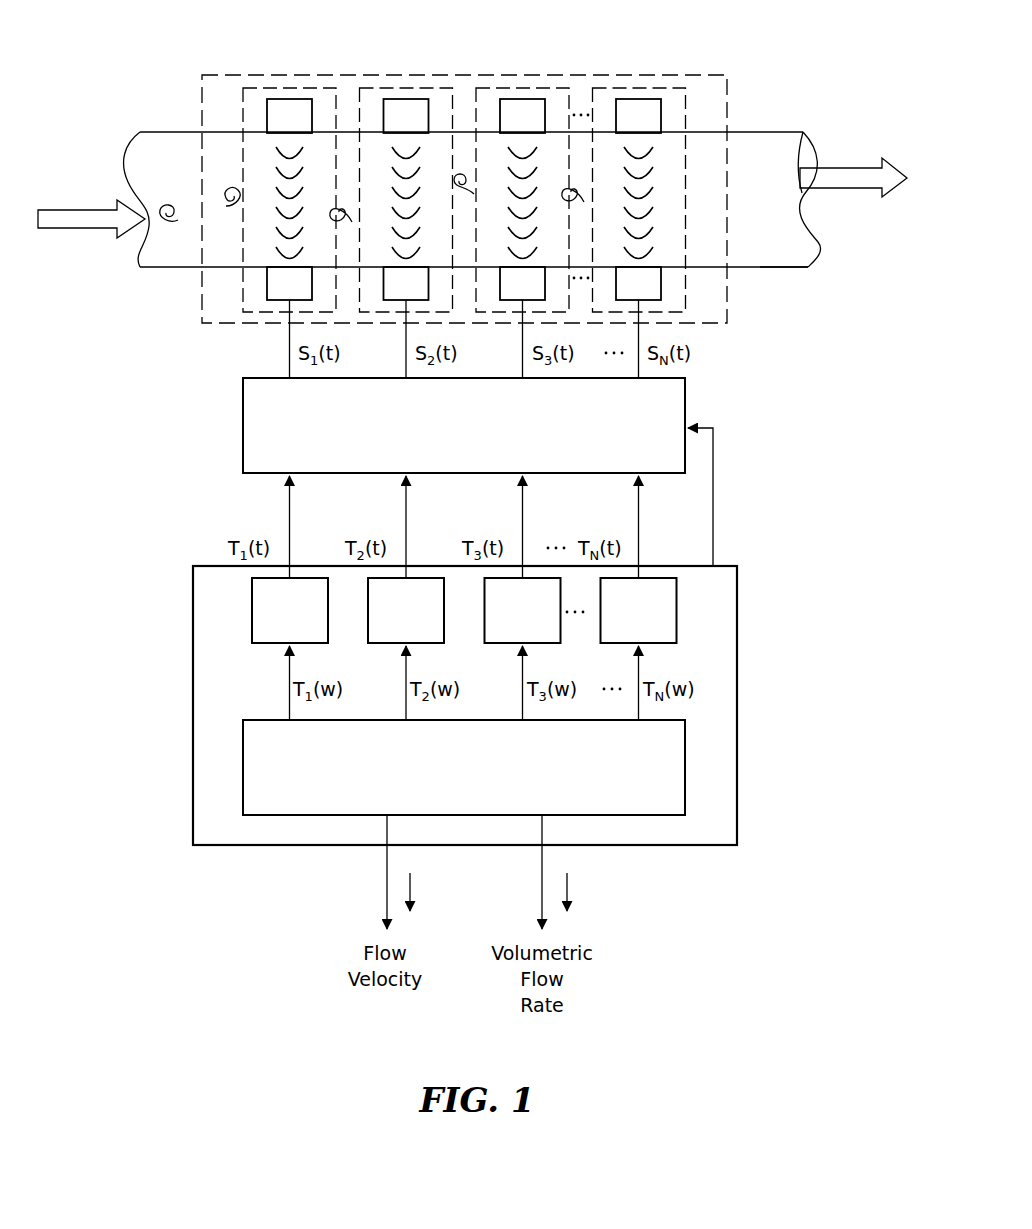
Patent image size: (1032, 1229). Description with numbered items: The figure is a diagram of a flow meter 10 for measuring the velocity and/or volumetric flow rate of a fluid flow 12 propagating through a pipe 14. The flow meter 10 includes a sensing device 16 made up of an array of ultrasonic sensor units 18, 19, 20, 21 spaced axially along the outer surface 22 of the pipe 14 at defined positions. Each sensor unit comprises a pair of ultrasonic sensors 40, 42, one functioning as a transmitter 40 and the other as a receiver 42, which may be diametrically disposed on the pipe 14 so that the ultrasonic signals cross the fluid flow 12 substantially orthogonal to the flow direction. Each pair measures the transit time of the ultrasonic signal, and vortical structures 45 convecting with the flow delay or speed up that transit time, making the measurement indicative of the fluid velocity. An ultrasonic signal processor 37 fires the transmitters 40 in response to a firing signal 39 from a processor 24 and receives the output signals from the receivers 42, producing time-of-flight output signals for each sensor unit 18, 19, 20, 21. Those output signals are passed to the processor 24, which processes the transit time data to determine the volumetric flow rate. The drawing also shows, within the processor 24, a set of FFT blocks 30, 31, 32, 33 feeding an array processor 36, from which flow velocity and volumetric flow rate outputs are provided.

The flow meter 10 is at (847, 373).
The fluid flow 12 is at (78, 205).
The pipe 14 is at (778, 124).
The sensing device 16 is at (728, 313).
The ultrasonic sensor unit 18 is at (296, 80).
The ultrasonic sensor unit 19 is at (412, 80).
The ultrasonic sensor unit 20 is at (529, 80).
The ultrasonic sensor unit 21 is at (645, 80).
The outer surface 22 is at (780, 258).
The processor 24 is at (740, 618).
The first FFT logic 30 is at (314, 566).
The second FFT logic 31 is at (432, 566).
The third FFT logic 32 is at (528, 566).
The Nth FFT logic 33 is at (660, 566).
The array processor 36 is at (686, 776).
The ultrasonic signal processor 37 is at (243, 422).
The firing signal 39 is at (717, 485).
The ultrasonic sensor (transmitter) 40 is at (278, 98).
The ultrasonic sensor (receiver) 42 is at (267, 288).
The vortical structures 45 is at (343, 208).